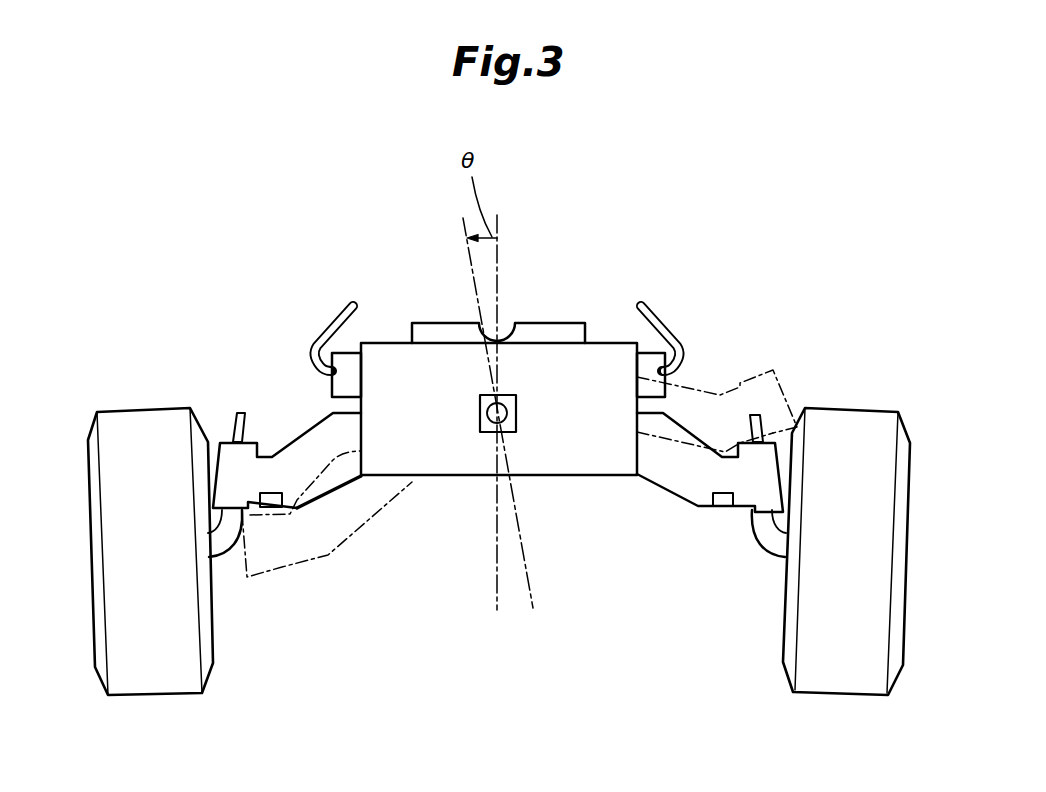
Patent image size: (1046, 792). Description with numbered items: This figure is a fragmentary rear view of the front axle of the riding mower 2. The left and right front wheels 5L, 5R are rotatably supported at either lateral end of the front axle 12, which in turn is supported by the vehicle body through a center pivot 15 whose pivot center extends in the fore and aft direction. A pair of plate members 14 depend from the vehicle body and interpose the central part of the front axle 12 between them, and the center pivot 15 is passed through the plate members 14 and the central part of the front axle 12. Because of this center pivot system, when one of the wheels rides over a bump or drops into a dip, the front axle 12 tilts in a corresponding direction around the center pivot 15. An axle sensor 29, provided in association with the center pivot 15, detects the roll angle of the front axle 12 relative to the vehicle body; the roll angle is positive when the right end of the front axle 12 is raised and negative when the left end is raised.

The riding mower 2 is at (322, 256).
The plate members 14 is at (388, 362).
The center pivot 15 is at (482, 420).
The axle sensor 29 is at (517, 413).
The front axle 12 is at (338, 477).
The left front wheel 5L is at (88, 498).
The right front wheel 5R is at (910, 493).